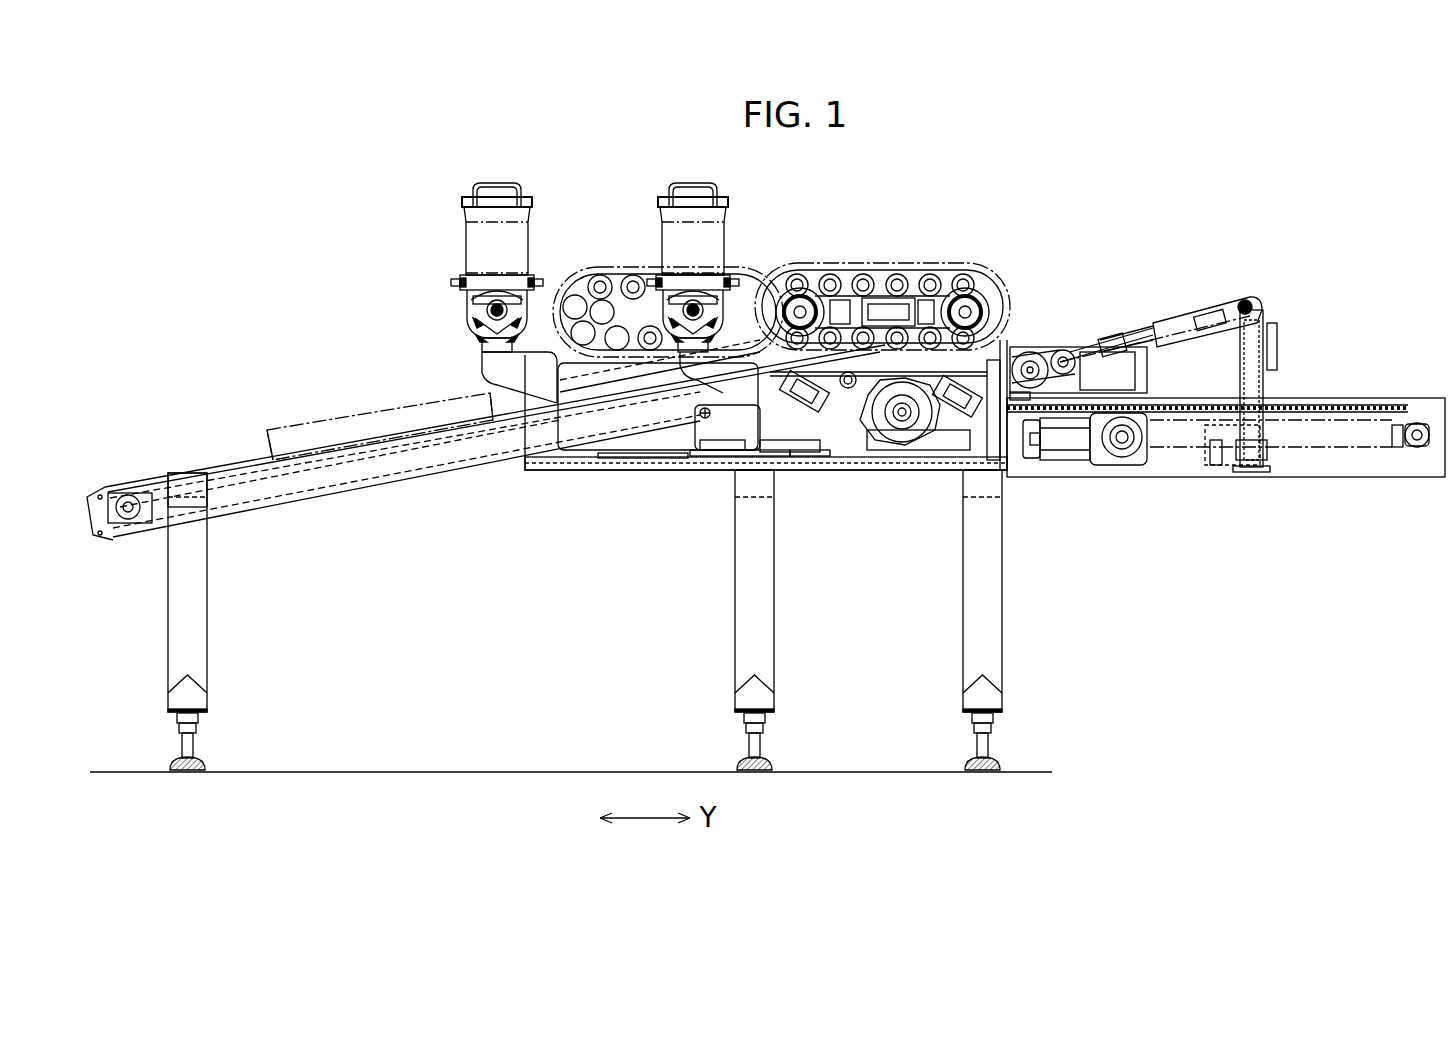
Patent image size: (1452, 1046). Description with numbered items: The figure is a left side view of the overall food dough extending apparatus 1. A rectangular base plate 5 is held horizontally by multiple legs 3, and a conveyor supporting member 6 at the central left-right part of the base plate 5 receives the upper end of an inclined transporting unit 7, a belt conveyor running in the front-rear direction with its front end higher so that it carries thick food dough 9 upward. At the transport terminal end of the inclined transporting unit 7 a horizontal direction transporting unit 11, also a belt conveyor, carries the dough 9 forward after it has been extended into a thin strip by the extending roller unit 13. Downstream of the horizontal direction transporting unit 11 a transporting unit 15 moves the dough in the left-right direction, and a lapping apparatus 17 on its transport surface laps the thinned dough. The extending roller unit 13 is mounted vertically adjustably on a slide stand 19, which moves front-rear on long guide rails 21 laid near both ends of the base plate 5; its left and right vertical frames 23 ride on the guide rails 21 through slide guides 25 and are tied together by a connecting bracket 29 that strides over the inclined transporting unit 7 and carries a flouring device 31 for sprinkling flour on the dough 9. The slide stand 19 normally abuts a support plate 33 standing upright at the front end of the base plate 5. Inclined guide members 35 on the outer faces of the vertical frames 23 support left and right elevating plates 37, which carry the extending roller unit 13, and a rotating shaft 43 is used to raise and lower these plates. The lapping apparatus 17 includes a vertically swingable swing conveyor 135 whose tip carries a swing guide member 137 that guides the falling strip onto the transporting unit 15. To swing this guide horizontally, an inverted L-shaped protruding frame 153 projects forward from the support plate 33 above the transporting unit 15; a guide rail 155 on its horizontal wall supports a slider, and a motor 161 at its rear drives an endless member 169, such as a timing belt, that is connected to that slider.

The food dough extending apparatus 1 is at (923, 212).
The legs 3 is at (765, 642).
The base plate 5 is at (663, 476).
The conveyor supporting member 6 is at (705, 480).
The inclined transporting unit 7 is at (378, 482).
The food dough 9 is at (382, 405).
The horizontal direction transporting unit 11 is at (1013, 345).
The extending roller unit 13 is at (605, 262).
The transporting unit 15 is at (1130, 530).
The lapping apparatus 17 is at (1225, 270).
The slide stand 19 is at (722, 470).
The guide rails 21 is at (632, 476).
The vertical frames 23 is at (783, 468).
The slide guides 25 is at (803, 478).
The connecting bracket 29 is at (680, 360).
The flouring device 31 is at (462, 250).
The support plate 33 is at (1010, 478).
The guide members 35 is at (843, 470).
The elevating plates 37 is at (800, 440).
The rotating shaft 43 is at (906, 475).
The swing conveyor 135 is at (1162, 322).
The swing guide member 137 is at (1270, 380).
The protruding frame 153 is at (1430, 475).
The guide rail 155 is at (1380, 410).
The motor 161 is at (1078, 475).
The endless member 169 is at (1320, 452).